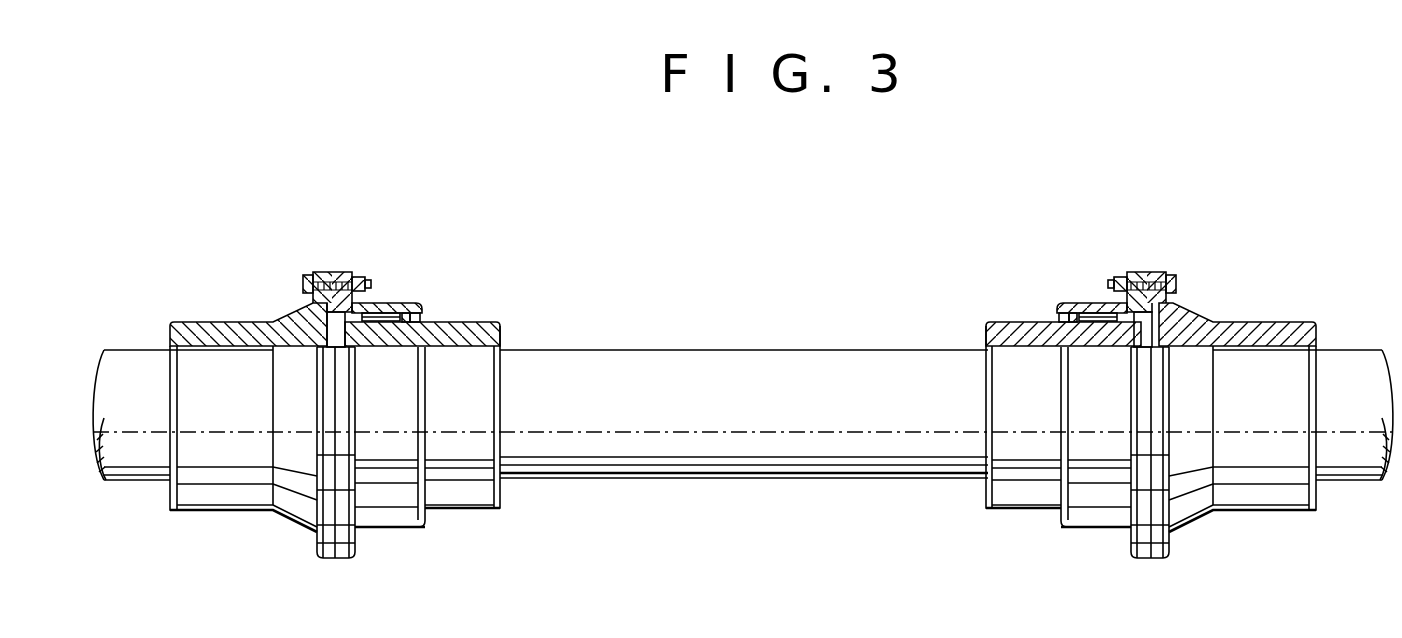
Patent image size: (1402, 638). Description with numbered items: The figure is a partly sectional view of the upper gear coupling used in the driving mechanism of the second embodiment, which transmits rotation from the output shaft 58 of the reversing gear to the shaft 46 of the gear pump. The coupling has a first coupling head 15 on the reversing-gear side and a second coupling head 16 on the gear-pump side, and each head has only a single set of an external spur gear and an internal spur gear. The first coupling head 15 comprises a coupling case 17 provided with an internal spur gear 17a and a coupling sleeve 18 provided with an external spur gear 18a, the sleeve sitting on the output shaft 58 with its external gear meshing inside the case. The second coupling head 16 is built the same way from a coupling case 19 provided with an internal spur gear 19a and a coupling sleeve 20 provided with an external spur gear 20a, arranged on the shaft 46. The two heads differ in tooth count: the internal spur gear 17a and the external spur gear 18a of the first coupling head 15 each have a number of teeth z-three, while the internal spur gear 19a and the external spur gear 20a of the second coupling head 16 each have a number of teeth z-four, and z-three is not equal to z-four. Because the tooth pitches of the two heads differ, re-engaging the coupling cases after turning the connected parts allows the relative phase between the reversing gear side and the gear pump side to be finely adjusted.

The first coupling head 15 is at (396, 527).
The second coupling head 16 is at (1025, 510).
The coupling case 17 is at (386, 303).
The internal spur gear 17a is at (400, 312).
The coupling sleeve 18 is at (467, 323).
The external spur gear 18a is at (383, 318).
The coupling case 19 is at (1106, 300).
The internal spur gear 19a is at (1092, 308).
The coupling sleeve 20 is at (1012, 323).
The external spur gear 20a is at (1092, 318).
The shaft of the gear pump 46 is at (1350, 481).
The output shaft of the reversing gear 58 is at (130, 482).